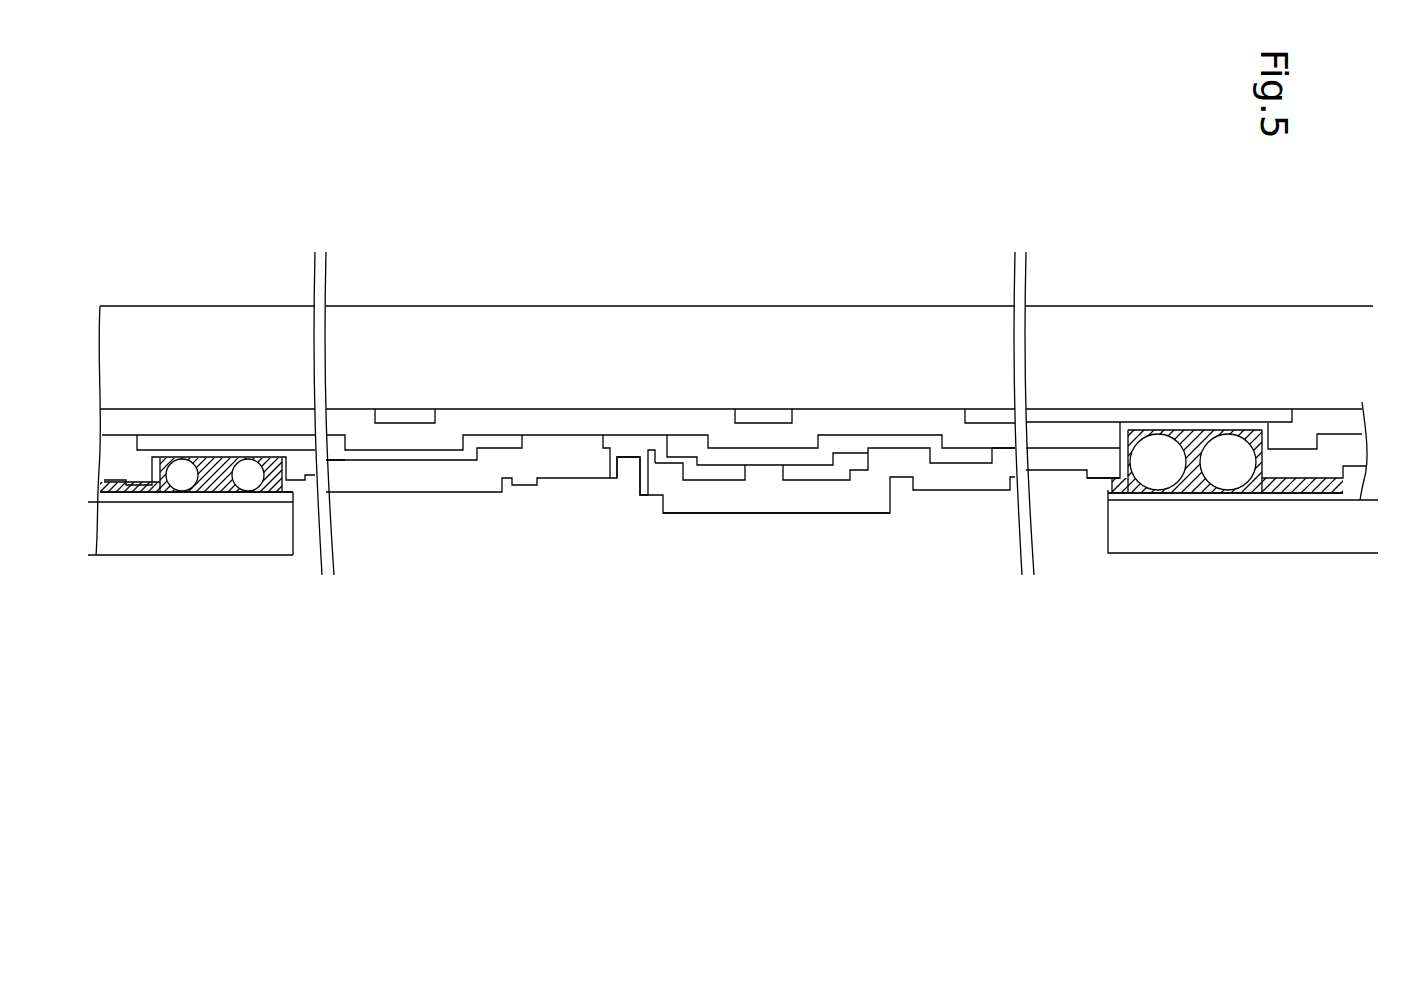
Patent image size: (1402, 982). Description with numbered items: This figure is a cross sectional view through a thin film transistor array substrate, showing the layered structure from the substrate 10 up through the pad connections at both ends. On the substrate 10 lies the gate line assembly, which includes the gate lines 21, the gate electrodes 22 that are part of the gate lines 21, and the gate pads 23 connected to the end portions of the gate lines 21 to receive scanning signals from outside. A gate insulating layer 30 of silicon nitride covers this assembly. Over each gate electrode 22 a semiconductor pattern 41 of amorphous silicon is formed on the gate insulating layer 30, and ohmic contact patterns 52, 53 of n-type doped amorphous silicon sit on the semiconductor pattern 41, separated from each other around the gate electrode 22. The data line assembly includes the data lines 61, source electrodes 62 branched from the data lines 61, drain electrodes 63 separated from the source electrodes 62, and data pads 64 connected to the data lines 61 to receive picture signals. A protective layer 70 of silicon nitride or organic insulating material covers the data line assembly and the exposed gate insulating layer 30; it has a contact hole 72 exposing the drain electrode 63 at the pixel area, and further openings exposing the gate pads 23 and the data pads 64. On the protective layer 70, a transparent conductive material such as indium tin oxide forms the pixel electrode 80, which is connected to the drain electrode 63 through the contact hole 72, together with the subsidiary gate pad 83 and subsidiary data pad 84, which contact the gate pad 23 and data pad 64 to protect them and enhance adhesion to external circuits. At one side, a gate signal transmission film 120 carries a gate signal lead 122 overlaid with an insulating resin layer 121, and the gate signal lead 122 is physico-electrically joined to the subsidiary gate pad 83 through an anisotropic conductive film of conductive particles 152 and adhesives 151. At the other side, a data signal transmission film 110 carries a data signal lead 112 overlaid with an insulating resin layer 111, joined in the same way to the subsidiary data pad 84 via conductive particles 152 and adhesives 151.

The substrate 10 is at (728, 318).
The gate line 21 is at (410, 414).
The gate electrode 22 is at (765, 418).
The gate pad 23 is at (1143, 414).
The gate insulating layer 30 is at (148, 414).
The semiconductor pattern 41 is at (833, 440).
The ohmic contact pattern 52 is at (852, 446).
The ohmic contact pattern 53 is at (680, 443).
The data line 61 is at (428, 450).
The source electrode 62 is at (805, 478).
The drain electrode 63 is at (730, 478).
The data pad 64 is at (280, 443).
The protective layer 70 is at (108, 470).
The contact hole 72 is at (627, 486).
The pixel electrode 80 is at (578, 478).
The subsidiary gate pad 83 is at (1097, 490).
The subsidiary data pad 84 is at (140, 487).
The data signal transmission film 110 is at (128, 556).
The insulating resin layer 111 is at (182, 550).
The data signal lead 112 is at (253, 503).
The gate signal transmission film 120 is at (1293, 565).
The insulating resin layer 121 is at (1270, 538).
The gate signal lead 122 is at (1242, 497).
The adhesives 151 is at (215, 488).
The conductive particles 152 is at (173, 485).